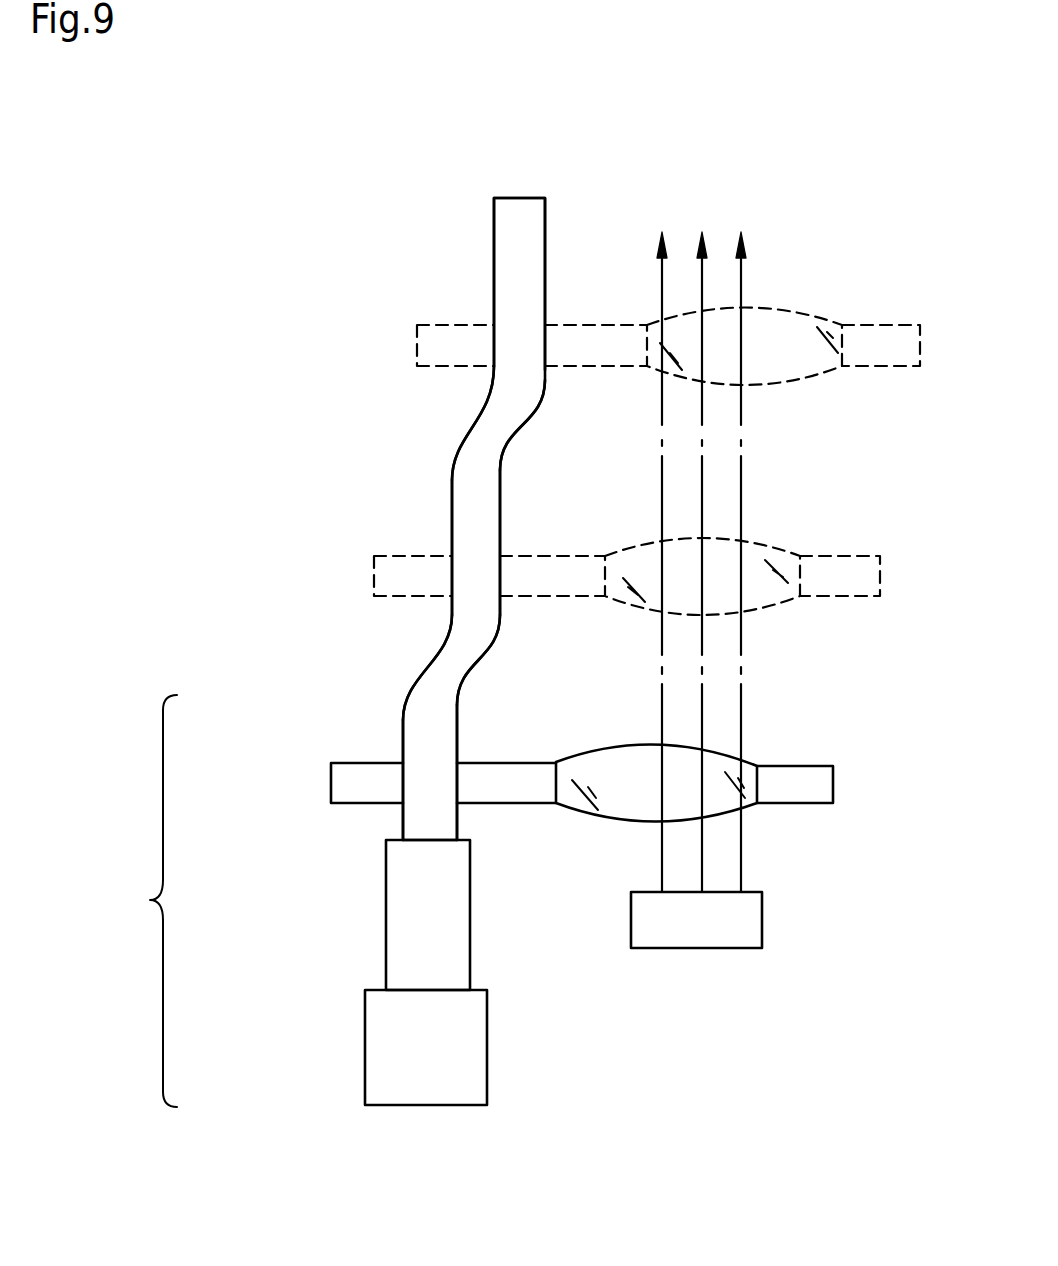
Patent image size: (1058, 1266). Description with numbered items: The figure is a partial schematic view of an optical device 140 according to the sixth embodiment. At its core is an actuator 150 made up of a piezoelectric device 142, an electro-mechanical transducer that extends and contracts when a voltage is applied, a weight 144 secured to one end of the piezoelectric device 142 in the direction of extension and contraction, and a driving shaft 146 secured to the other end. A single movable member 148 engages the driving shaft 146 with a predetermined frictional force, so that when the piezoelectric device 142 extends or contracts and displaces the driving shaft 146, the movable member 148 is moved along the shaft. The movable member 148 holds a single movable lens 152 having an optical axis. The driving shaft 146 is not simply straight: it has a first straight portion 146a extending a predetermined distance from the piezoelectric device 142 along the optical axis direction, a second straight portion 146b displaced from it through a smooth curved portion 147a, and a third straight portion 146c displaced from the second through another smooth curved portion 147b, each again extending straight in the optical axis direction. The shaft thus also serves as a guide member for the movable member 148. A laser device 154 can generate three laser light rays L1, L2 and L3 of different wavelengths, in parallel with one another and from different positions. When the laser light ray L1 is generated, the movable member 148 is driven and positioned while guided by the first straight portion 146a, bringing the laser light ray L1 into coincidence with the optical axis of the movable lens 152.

The optical device 140 is at (240, 243).
The piezoelectric device 142 is at (386, 920).
The weight 144 is at (365, 1048).
The driving shaft 146 is at (402, 720).
The first straight portion 146a is at (400, 818).
The second straight portion 146b is at (452, 505).
The third straight portion 146c is at (494, 265).
The smooth curved portion 147a is at (426, 656).
The smooth curved portion 147b is at (476, 418).
The movable member 148 is at (331, 781).
The actuator 150 is at (121, 901).
The movable lens 152 is at (608, 748).
The laser device 154 is at (686, 950).
The laser light ray L1 is at (638, 557).
The laser light ray L2 is at (706, 542).
The laser light ray L3 is at (769, 559).